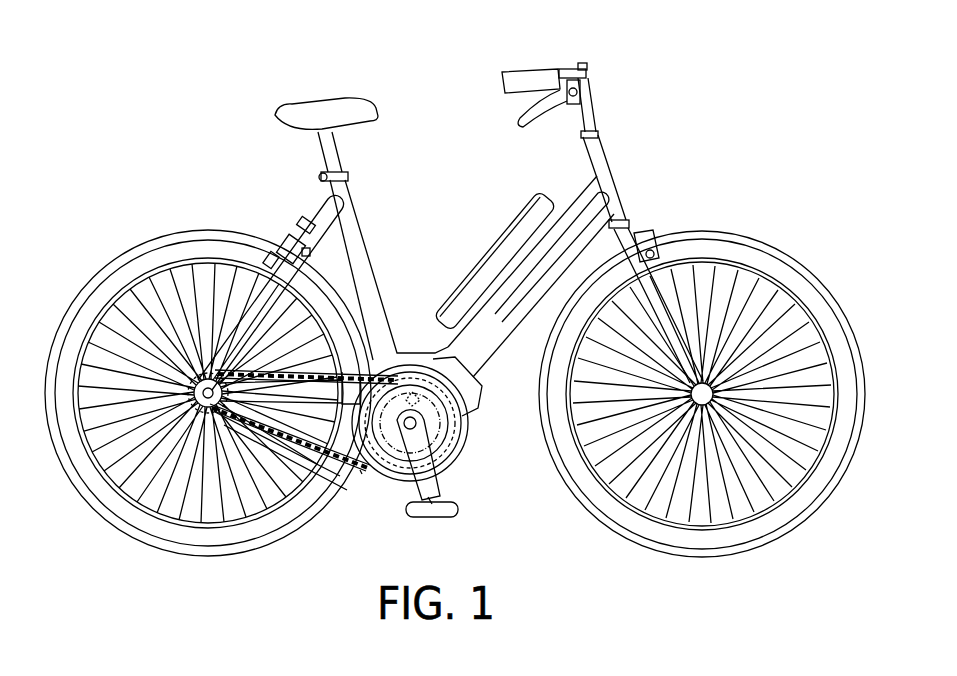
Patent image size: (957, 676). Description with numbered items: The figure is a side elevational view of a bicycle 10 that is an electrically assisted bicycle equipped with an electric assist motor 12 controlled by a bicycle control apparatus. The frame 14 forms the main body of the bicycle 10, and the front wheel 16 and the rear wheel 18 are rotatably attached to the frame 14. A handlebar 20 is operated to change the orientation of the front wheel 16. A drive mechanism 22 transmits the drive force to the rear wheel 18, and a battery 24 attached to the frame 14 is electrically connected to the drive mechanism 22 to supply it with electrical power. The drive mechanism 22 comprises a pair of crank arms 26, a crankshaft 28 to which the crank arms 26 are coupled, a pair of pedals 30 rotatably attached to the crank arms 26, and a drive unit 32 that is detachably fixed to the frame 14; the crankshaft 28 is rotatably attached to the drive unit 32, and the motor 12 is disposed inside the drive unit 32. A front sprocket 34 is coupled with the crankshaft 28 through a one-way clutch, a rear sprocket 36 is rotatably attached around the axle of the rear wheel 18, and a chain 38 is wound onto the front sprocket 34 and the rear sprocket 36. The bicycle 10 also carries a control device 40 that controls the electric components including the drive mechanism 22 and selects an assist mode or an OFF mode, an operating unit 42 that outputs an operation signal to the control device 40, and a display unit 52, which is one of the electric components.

The bicycle 10 is at (727, 70).
The electric assist motor 12 is at (452, 420).
The frame 14 is at (404, 224).
The front wheel 16 is at (761, 240).
The rear wheel 18 is at (143, 238).
The handlebar 20 is at (531, 68).
The drive mechanism 22 is at (370, 494).
The battery 24 is at (518, 218).
The crank arms 26 is at (458, 501).
The crankshaft 28 is at (452, 446).
The pedals 30 is at (434, 518).
The drive unit 32 is at (470, 375).
The front sprocket 34 is at (455, 468).
The rear sprocket 36 is at (192, 412).
The chain 38 is at (356, 478).
The control device 40 is at (418, 360).
The operating unit 42 is at (579, 66).
The display unit 52 is at (587, 64).